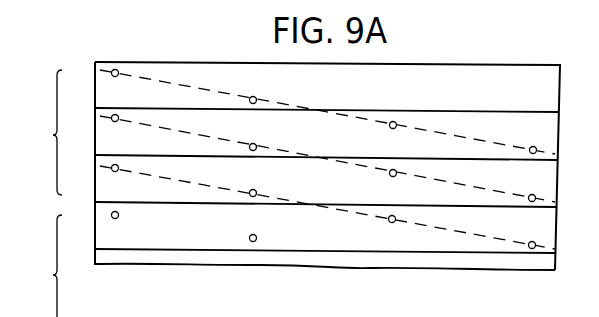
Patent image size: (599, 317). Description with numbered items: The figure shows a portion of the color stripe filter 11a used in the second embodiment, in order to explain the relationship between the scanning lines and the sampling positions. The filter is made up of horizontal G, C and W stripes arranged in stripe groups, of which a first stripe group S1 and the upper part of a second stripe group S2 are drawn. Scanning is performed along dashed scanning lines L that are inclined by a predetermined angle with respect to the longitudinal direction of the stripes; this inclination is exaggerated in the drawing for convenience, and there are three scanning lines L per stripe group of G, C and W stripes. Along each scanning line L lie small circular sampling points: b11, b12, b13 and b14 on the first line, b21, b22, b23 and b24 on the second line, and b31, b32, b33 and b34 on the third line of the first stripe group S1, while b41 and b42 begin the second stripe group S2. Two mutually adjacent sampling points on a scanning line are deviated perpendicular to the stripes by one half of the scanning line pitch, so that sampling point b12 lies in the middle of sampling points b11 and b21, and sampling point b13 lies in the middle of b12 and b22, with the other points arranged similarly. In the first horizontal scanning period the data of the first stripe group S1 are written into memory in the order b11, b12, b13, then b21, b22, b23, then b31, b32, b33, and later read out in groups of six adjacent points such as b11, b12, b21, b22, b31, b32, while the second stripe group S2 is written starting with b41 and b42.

The color stripe filter 11a is at (100, 48).
The scanning line L is at (212, 82).
The sampling point b11 is at (115, 77).
The sampling point b12 is at (256, 98).
The sampling point b13 is at (393, 129).
The sampling point b14 is at (533, 146).
The sampling point b21 is at (115, 122).
The sampling point b22 is at (256, 145).
The sampling point b23 is at (393, 177).
The sampling point b24 is at (532, 194).
The sampling point b31 is at (115, 172).
The sampling point b32 is at (256, 191).
The sampling point b33 is at (392, 223).
The sampling point b34 is at (532, 241).
The sampling point b41 is at (116, 218).
The sampling point b42 is at (256, 236).
The first stripe group S1 is at (55, 132).
The second stripe group S2 is at (54, 264).